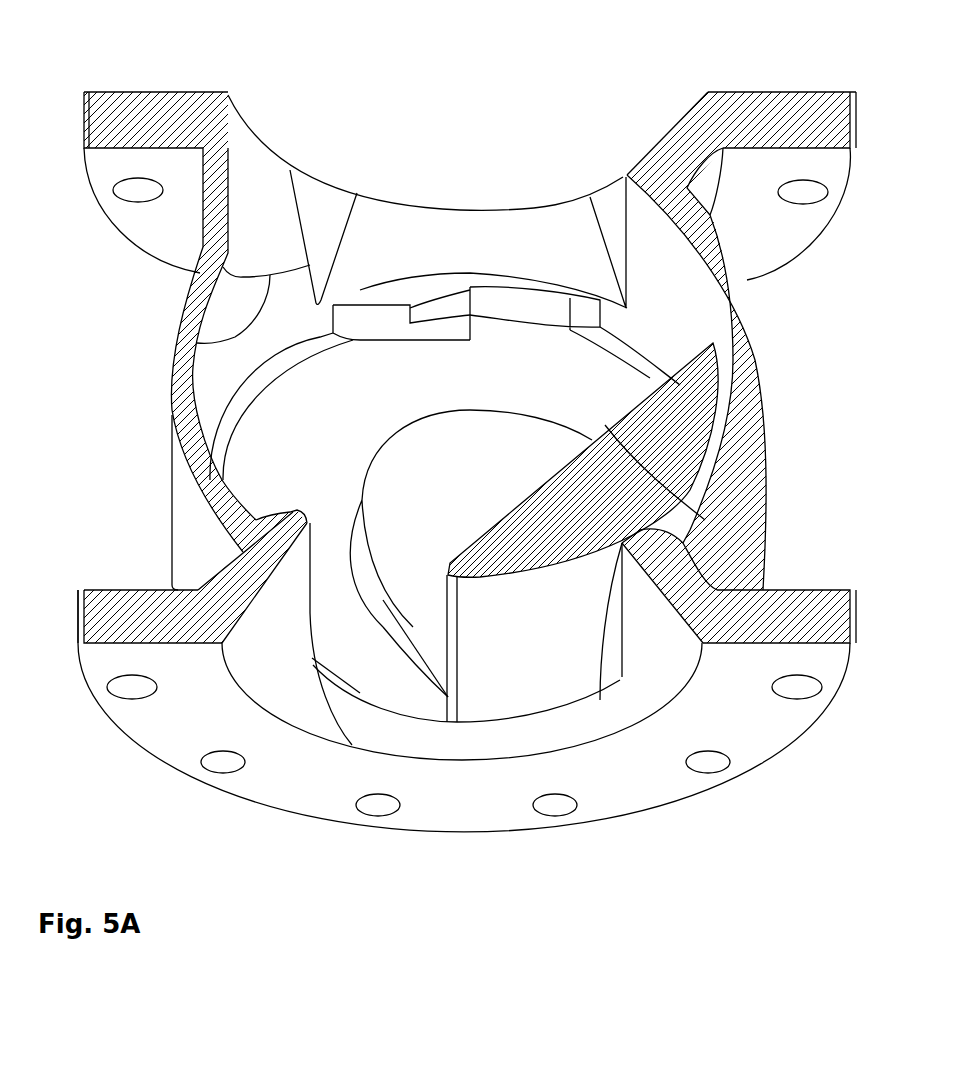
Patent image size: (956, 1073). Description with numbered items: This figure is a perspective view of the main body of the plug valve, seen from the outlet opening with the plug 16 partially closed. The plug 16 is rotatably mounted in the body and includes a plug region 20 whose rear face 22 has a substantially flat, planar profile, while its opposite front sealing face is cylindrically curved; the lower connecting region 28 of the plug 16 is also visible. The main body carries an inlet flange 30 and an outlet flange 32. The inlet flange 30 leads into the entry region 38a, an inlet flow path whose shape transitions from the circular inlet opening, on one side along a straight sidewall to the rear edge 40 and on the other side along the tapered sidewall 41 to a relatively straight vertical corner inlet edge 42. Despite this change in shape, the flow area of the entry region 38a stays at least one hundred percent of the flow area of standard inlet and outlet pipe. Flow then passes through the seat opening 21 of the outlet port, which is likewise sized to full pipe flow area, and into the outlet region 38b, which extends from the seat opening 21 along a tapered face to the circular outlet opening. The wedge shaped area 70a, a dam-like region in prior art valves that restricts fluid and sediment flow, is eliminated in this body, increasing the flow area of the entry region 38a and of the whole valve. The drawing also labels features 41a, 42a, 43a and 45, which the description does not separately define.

The plug 16 is at (576, 573).
The plug region 20 is at (445, 376).
The seat opening 21 is at (242, 545).
The rear face 22 is at (713, 480).
The lower connecting region 28 is at (471, 553).
The inlet flange 30 is at (152, 93).
The outlet flange 32 is at (742, 703).
The entry region 38a is at (457, 190).
The outlet region 38b is at (428, 743).
The rear edge 40 is at (172, 343).
The tapered sidewall 41 is at (663, 122).
The left rib 41a is at (327, 217).
The inlet edge 42 is at (620, 178).
The seat step 42a is at (310, 293).
The left wall section 43a is at (190, 260).
The bore wall 45 is at (622, 580).
The wedge shaped area 70a is at (250, 203).